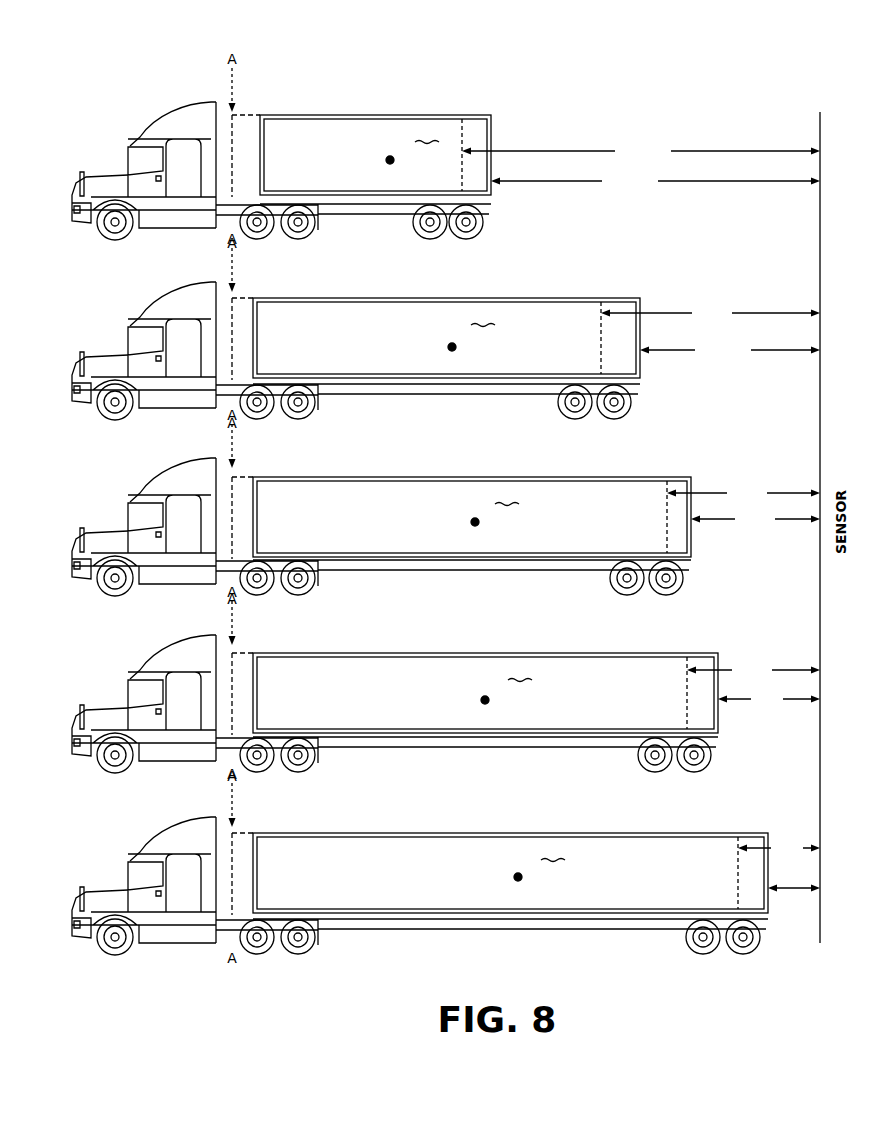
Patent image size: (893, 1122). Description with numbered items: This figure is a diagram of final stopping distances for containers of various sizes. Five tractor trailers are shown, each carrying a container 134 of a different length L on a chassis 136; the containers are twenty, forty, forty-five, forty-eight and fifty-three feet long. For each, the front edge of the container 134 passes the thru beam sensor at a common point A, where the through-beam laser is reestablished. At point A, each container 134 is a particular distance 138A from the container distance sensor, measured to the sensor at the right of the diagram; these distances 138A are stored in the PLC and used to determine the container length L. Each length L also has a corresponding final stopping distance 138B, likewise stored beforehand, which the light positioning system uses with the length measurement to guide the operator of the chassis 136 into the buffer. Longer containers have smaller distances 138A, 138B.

The container 134 is at (291, 175).
The chassis 136 is at (410, 950).
The distance from container distance sensor at point A 138A is at (650, 138).
The final stopping distance 138B is at (634, 203).